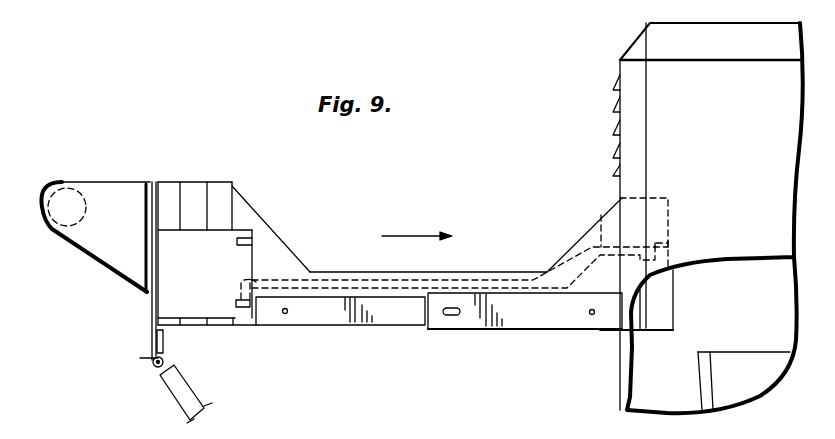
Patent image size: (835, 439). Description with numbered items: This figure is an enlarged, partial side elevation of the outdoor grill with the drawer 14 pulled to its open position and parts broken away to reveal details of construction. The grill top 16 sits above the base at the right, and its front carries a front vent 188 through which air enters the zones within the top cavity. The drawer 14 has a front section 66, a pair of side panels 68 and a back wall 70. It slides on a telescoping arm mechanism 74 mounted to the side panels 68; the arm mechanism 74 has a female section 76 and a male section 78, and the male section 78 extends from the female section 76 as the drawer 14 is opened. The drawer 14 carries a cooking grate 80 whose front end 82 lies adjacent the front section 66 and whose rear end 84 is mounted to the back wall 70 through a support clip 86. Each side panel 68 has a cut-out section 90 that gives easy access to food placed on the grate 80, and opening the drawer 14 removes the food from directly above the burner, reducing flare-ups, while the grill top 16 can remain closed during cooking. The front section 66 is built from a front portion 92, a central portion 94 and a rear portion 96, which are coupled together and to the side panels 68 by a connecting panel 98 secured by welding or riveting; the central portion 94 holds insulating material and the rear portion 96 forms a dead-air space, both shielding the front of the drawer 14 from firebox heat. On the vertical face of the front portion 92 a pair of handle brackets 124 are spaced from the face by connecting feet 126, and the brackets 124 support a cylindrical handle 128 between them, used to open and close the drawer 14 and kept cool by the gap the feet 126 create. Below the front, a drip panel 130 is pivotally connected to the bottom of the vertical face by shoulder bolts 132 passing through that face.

The drawer 14 is at (440, 333).
The grill top 16 is at (634, 40).
The front section 66 is at (195, 178).
The side panels 68 is at (275, 252).
The back wall 70 is at (672, 214).
The telescoping arm mechanism 74 is at (516, 324).
The female section 76 is at (547, 324).
The male section 78 is at (328, 318).
The cooking grate 80 is at (536, 269).
The front end 82 is at (246, 281).
The rear end 84 is at (601, 240).
The support clip 86 is at (670, 243).
The cut-out section 90 is at (393, 258).
The front portion 92 is at (163, 185).
The central portion 94 is at (208, 184).
The rear portion 96 is at (232, 186).
The connecting panel 98 is at (190, 308).
The handle brackets 124 is at (97, 250).
The connecting feet 126 is at (148, 190).
The cylindrical handle 128 is at (60, 181).
The drip panel 130 is at (184, 402).
The shoulder bolts 132 is at (153, 359).
The front vent 188 is at (612, 102).